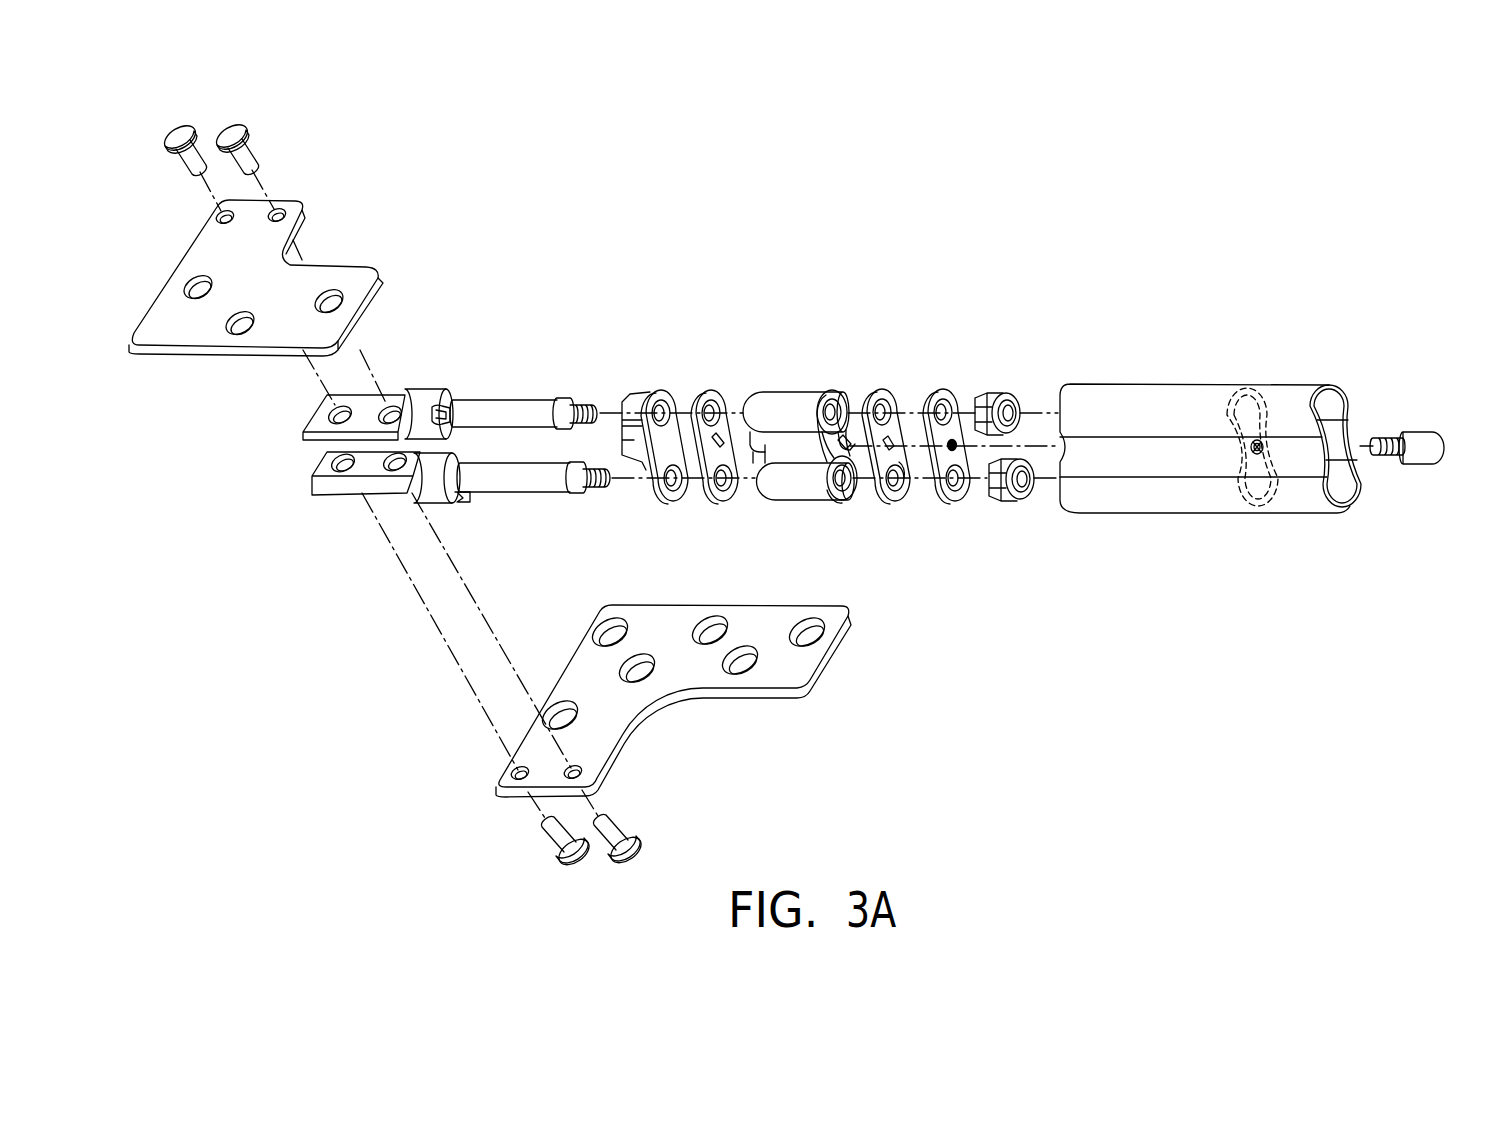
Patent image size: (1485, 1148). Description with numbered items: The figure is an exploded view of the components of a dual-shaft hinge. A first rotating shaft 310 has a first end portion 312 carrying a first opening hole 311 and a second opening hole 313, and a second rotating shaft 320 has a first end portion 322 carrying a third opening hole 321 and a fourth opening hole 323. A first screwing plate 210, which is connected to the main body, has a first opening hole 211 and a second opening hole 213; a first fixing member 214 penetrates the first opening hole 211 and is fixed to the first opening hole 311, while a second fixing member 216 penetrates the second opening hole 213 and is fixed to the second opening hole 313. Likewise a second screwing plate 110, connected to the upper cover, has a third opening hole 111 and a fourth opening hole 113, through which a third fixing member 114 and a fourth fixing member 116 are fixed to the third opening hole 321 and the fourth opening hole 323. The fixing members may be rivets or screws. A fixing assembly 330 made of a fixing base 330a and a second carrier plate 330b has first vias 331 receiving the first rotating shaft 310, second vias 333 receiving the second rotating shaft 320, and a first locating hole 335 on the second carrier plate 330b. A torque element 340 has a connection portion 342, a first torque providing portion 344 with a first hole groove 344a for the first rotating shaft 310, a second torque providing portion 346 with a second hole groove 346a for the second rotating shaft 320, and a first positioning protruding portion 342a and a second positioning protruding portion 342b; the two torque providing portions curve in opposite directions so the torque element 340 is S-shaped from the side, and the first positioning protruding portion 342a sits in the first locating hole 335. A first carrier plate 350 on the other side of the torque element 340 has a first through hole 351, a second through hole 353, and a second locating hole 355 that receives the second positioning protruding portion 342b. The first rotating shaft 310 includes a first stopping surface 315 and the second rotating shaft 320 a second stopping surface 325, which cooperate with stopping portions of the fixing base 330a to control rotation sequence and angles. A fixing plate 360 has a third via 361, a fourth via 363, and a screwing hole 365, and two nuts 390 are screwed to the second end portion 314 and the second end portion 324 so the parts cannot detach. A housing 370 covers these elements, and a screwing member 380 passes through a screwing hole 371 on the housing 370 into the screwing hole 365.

The second screwing plate 110 is at (676, 682).
The third opening hole 111 is at (516, 772).
The fourth opening hole 113 is at (578, 770).
The third fixing member 114 is at (556, 860).
The fourth fixing member 116 is at (614, 858).
The first screwing plate 210 is at (188, 270).
The first opening hole 211 is at (220, 215).
The second opening hole 213 is at (280, 211).
The first fixing member 214 is at (178, 130).
The second fixing member 216 is at (232, 129).
The first rotating shaft 310 is at (518, 370).
The first opening hole 311 is at (344, 406).
The first end portion 312 is at (318, 420).
The second opening hole 313 is at (394, 406).
The second end portion 314 is at (582, 402).
The first stopping surface 315 is at (446, 414).
The second rotating shaft 320 is at (529, 519).
The third opening hole 321 is at (346, 470).
The first end portion 322 is at (322, 467).
The fourth opening hole 323 is at (394, 470).
The second end portion 324 is at (594, 488).
The second stopping surface 325 is at (463, 502).
The fixing assembly 330 is at (676, 374).
The fixing base 330a is at (635, 395).
The second carrier plate 330b is at (727, 392).
The first vias 331 is at (709, 402).
The second vias 333 is at (720, 488).
The first locating hole 335 is at (754, 466).
The torque element 340 is at (804, 506).
The connection portion 342 is at (830, 450).
The first positioning protruding portion 342a is at (758, 392).
The second positioning protruding portion 342b is at (850, 456).
The first torque providing portion 344 is at (826, 449).
The first hole groove 344a is at (850, 444).
The second torque providing portion 346 is at (838, 488).
The second hole groove 346a is at (850, 492).
The first carrier plate 350 is at (919, 448).
The first through hole 351 is at (891, 442).
The second through hole 353 is at (898, 488).
The second locating hole 355 is at (906, 488).
The fixing plate 360 is at (965, 444).
The third via 361 is at (956, 441).
The fourth via 363 is at (958, 488).
The screwing hole 365 is at (1014, 500).
The housing 370 is at (1210, 404).
The screwing hole 371 is at (1261, 444).
The screwing member 380 is at (1432, 438).
The nuts 390 is at (1012, 398).